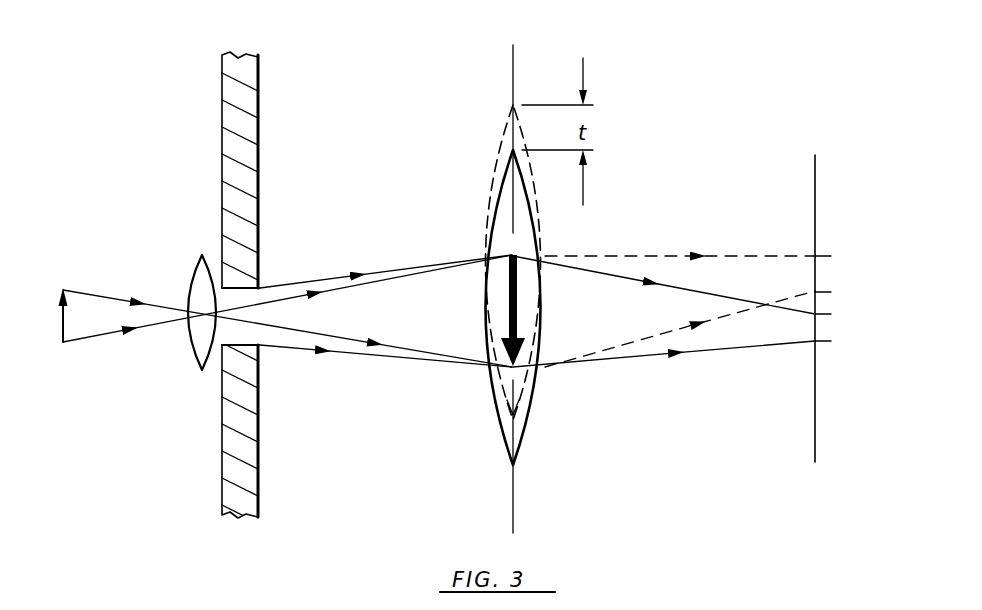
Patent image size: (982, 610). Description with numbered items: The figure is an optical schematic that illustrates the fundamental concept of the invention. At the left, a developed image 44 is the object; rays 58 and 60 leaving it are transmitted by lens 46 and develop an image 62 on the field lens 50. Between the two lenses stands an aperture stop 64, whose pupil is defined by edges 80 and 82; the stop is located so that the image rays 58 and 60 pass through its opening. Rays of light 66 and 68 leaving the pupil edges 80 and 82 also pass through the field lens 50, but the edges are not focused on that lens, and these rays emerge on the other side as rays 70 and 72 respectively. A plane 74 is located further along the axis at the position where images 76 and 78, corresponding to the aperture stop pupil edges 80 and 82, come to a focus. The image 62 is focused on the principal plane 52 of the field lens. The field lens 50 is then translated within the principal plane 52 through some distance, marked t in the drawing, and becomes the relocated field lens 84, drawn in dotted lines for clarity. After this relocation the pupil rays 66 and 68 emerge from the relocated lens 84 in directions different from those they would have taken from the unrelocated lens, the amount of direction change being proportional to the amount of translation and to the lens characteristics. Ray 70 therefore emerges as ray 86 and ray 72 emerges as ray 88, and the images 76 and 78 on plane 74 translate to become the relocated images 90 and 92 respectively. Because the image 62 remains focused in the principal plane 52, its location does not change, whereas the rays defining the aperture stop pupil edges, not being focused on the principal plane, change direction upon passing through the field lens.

The developed image 44 is at (64, 336).
The lens 46 is at (192, 356).
The field lens 50 is at (500, 437).
The principal plane 52 is at (514, 490).
The ray 58 is at (126, 299).
The ray 60 is at (118, 334).
The image 62 is at (508, 300).
The aperture stop 64 is at (260, 440).
The ray of light 66 is at (342, 272).
The ray of light 68 is at (350, 354).
The ray 70 is at (718, 290).
The ray 72 is at (725, 352).
The plane 74 is at (815, 425).
The image 76 is at (841, 315).
The image 78 is at (841, 345).
The edge 80 is at (262, 288).
The edge 82 is at (262, 348).
The relocated field lens 84 is at (497, 150).
The ray 86 is at (628, 250).
The ray 88 is at (608, 356).
The relocated image 90 is at (840, 258).
The relocated image 92 is at (841, 298).